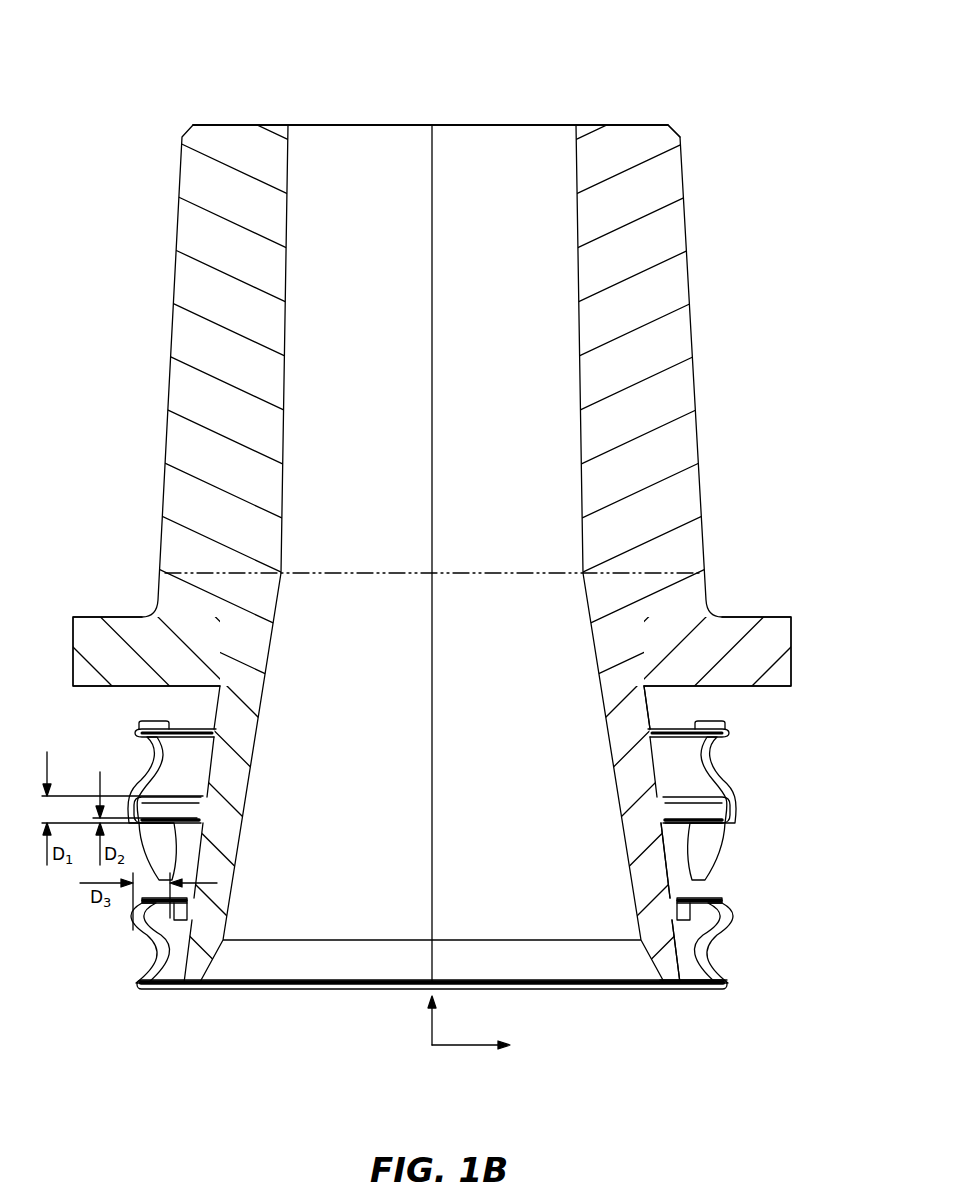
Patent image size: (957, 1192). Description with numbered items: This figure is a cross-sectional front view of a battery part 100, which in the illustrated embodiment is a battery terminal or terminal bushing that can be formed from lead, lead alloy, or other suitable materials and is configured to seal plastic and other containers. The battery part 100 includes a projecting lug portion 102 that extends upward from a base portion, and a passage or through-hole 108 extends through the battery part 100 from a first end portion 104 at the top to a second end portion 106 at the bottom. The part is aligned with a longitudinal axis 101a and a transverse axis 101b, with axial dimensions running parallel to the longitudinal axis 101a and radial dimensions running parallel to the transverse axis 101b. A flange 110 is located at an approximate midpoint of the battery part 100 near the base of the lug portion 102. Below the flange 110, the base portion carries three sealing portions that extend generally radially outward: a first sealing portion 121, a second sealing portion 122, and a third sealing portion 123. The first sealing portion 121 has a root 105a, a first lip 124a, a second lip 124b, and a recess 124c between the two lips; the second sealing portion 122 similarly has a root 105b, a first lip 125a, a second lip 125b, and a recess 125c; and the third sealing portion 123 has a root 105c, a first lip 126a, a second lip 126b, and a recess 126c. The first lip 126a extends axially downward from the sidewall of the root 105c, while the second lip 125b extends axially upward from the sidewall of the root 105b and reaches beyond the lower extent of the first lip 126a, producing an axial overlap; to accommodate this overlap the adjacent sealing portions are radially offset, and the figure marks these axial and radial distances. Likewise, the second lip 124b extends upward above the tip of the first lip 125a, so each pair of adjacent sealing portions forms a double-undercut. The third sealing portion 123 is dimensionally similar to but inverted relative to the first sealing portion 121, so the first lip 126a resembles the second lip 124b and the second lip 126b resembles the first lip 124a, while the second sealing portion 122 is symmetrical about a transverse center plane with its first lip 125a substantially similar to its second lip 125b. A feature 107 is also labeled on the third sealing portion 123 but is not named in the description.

The battery part 100 is at (765, 105).
The lug portion 102 is at (674, 231).
The first end portion 104 is at (628, 125).
The second end portion 106 is at (620, 990).
The rib tip 107 is at (717, 713).
The through-hole 108 is at (458, 112).
The flange 110 is at (791, 638).
The longitudinal axis 101a is at (431, 1042).
The transverse axis 101b is at (433, 1046).
The root 105a is at (658, 955).
The root 105b is at (654, 888).
The root 105c is at (646, 772).
The first sealing portion 121 is at (758, 948).
The second sealing portion 122 is at (776, 863).
The third sealing portion 123 is at (481, 773).
The first lip 124a is at (722, 985).
The second lip 124b is at (722, 902).
The recess 124c is at (700, 955).
The first lip 125a is at (692, 883).
The second lip 125b is at (683, 838).
The recess 125c is at (683, 860).
The first lip 126a is at (733, 813).
The second lip 126b is at (733, 740).
The recess 126c is at (700, 757).